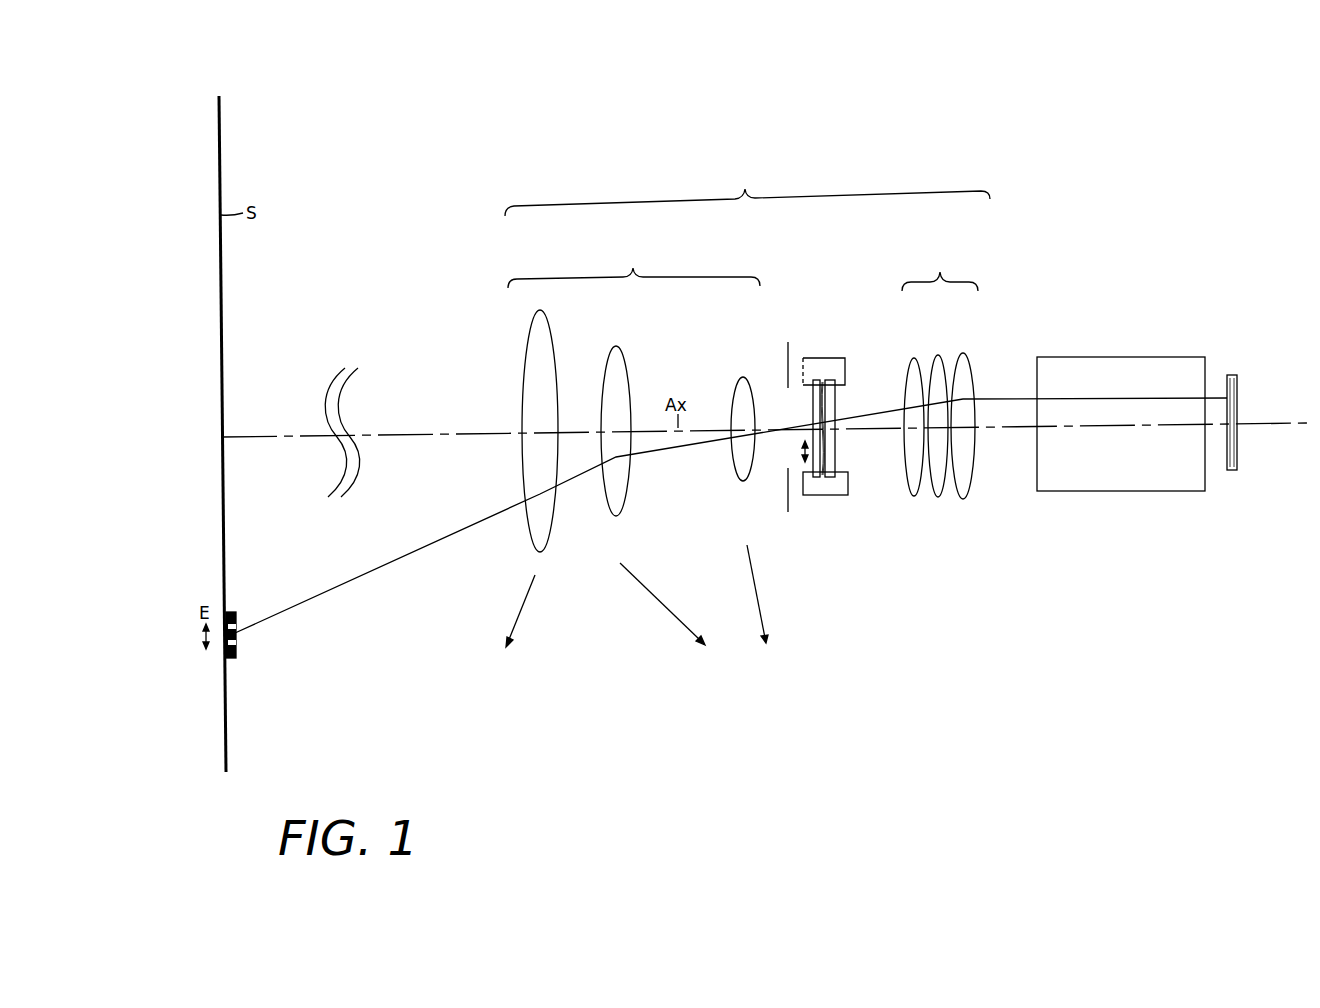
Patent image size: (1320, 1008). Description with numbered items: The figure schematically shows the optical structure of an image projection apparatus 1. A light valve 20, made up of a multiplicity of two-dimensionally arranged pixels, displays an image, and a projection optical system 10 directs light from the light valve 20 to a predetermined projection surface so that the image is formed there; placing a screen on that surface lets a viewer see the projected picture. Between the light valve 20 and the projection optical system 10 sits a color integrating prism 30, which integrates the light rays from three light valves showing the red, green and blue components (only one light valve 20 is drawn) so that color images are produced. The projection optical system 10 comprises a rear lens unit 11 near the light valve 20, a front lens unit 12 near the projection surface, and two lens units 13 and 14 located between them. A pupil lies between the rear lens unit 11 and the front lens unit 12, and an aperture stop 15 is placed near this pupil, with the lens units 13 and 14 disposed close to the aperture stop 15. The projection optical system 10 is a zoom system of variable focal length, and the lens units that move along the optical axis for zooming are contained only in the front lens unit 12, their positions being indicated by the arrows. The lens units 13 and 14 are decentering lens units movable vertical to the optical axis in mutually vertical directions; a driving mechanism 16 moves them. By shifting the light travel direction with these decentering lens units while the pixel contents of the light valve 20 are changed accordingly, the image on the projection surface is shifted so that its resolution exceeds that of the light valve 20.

The image projection apparatus 1 is at (1013, 587).
The projection optical system 10 is at (895, 405).
The rear lens unit 11 is at (940, 369).
The front lens unit 12 is at (634, 396).
The decentering lens unit 13 is at (834, 405).
The decentering lens unit 14 is at (812, 411).
The aperture stop 15 is at (788, 342).
The driving mechanism 16 is at (823, 497).
The light valve 20 is at (1239, 452).
The color integrating prism 30 is at (1127, 357).